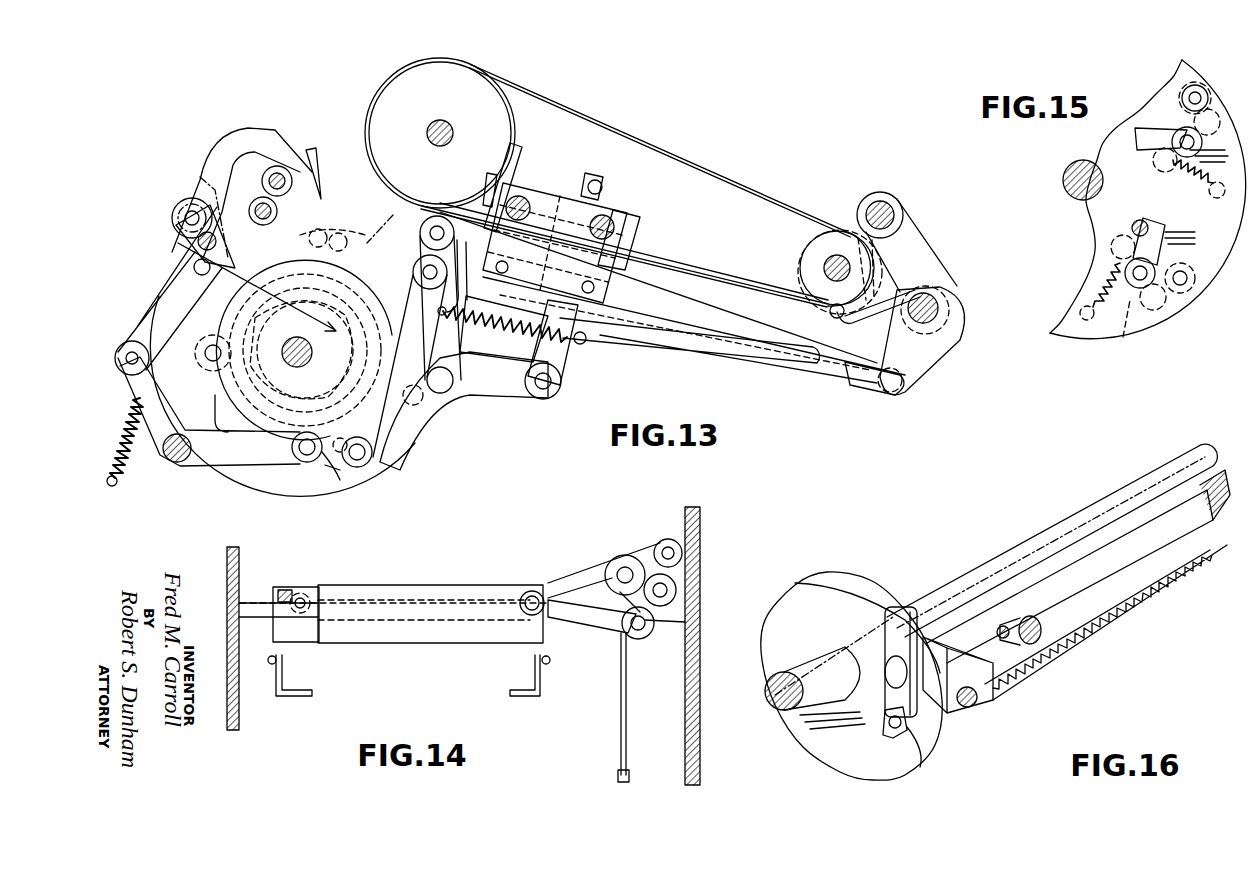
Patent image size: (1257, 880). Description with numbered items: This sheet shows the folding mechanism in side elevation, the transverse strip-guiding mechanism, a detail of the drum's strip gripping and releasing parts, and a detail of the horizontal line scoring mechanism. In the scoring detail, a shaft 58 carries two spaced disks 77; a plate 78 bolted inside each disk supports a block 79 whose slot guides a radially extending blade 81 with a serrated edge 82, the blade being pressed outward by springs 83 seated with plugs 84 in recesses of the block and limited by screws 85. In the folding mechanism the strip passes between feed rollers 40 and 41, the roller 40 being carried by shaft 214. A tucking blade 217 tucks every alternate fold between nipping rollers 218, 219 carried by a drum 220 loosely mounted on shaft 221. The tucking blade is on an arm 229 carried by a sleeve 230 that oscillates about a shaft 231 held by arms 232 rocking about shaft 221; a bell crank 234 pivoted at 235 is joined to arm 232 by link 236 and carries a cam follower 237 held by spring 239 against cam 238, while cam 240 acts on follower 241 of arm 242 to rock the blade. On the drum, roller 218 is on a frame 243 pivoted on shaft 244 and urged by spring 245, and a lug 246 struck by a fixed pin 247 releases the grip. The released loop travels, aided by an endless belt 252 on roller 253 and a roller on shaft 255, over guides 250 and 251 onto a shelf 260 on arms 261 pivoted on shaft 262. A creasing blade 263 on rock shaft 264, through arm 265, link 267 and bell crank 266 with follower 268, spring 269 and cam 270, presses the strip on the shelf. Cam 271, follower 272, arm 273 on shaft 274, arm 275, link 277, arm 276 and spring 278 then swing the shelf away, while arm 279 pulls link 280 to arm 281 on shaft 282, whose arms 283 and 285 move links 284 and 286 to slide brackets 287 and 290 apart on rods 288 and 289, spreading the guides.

In FIG. 13, the feed roller 40 is at (264, 176).
In FIG. 13, the feed roller 41 is at (251, 208).
In FIG. 16, the shaft 58 is at (1033, 545).
In FIG. 16, the disk 77 is at (820, 590).
In FIG. 16, the plate 78 is at (905, 625).
In FIG. 16, the block 79 is at (1170, 545).
In FIG. 16, the blade 81 is at (1020, 665).
In FIG. 16, the serrated edge 82 is at (1140, 605).
In FIG. 16, the spring 83 is at (1000, 628).
In FIG. 16, the plug 84 is at (1030, 618).
In FIG. 16, the screw 85 is at (970, 710).
In FIG. 13, the shaft 214 is at (278, 171).
In FIG. 13, the tucking blade 217 is at (322, 193).
In FIG. 13, the nipping roller 218 is at (347, 238).
In FIG. 15, the nipping roller 218 is at (1170, 313).
In FIG. 13, the nipping roller 219 is at (317, 229).
In FIG. 15, the nipping roller 219 is at (1203, 290).
In FIG. 13, the drum 220 is at (388, 218).
In FIG. 13, the shaft 221 is at (285, 348).
In FIG. 15, the shaft 221 is at (1068, 175).
In FIG. 13, the arm 229 is at (212, 142).
In FIG. 13, the sleeve 230 is at (180, 197).
In FIG. 13, the shaft 231 is at (183, 217).
In FIG. 13, the arm 232 is at (167, 240).
In FIG. 13, the bell crank 234 is at (135, 378).
In FIG. 13, the pivot 235 is at (178, 463).
In FIG. 13, the link 236 is at (150, 317).
In FIG. 13, the cam follower 237 is at (312, 462).
In FIG. 13, the cam 238 is at (293, 350).
In FIG. 13, the spring 239 is at (112, 470).
In FIG. 13, the cam 240 is at (220, 407).
In FIG. 13, the cam follower 241 is at (205, 354).
In FIG. 13, the arm 242 is at (200, 177).
In FIG. 15, the frame 243 is at (1120, 309).
In FIG. 15, the shaft 244 is at (1148, 275).
In FIG. 15, the spring 245 is at (1185, 182).
In FIG. 15, the lug 246 is at (1170, 240).
In FIG. 15, the pin 247 is at (1136, 223).
In FIG. 13, the guide 250 is at (663, 327).
In FIG. 14, the guide 250 is at (295, 697).
In FIG. 14, the guide 251 is at (512, 696).
In FIG. 13, the endless belt 252 is at (632, 140).
In FIG. 13, the roller 253 is at (813, 257).
In FIG. 13, the shaft 255 is at (440, 120).
In FIG. 13, the shelf 260 is at (845, 378).
In FIG. 13, the arm 261 is at (930, 252).
In FIG. 13, the shaft 262 is at (885, 205).
In FIG. 13, the creasing blade 263 is at (870, 322).
In FIG. 13, the rock shaft 264 is at (940, 300).
In FIG. 13, the arm 265 is at (905, 335).
In FIG. 13, the bell crank 266 is at (443, 340).
In FIG. 13, the link 267 is at (748, 358).
In FIG. 13, the cam follower 268 is at (372, 455).
In FIG. 13, the spring 269 is at (522, 330).
In FIG. 13, the cam 270 is at (357, 297).
In FIG. 13, the cam 271 is at (333, 282).
In FIG. 13, the cam follower 272 is at (337, 473).
In FIG. 13, the arm 273 is at (410, 330).
In FIG. 13, the shaft 274 is at (441, 393).
In FIG. 13, the arm 275 is at (427, 250).
In FIG. 13, the arm 276 is at (889, 262).
In FIG. 13, the link 277 is at (690, 267).
In FIG. 13, the spring 278 is at (470, 256).
In FIG. 13, the arm 279 is at (500, 390).
In FIG. 13, the link 280 is at (553, 353).
In FIG. 14, the link 280 is at (619, 728).
In FIG. 13, the arm 281 is at (600, 175).
In FIG. 14, the arm 281 is at (628, 565).
In FIG. 14, the shaft 282 is at (677, 595).
In FIG. 14, the arm 283 is at (683, 555).
In FIG. 14, the link 284 is at (567, 580).
In FIG. 14, the arm 285 is at (645, 636).
In FIG. 14, the link 286 is at (585, 625).
In FIG. 13, the bracket 287 is at (600, 267).
In FIG. 14, the bracket 287 is at (300, 633).
In FIG. 13, the rod 288 is at (527, 198).
In FIG. 13, the rod 289 is at (610, 215).
In FIG. 14, the rod 289 is at (262, 603).
In FIG. 13, the bracket 290 is at (555, 243).
In FIG. 14, the bracket 290 is at (432, 635).